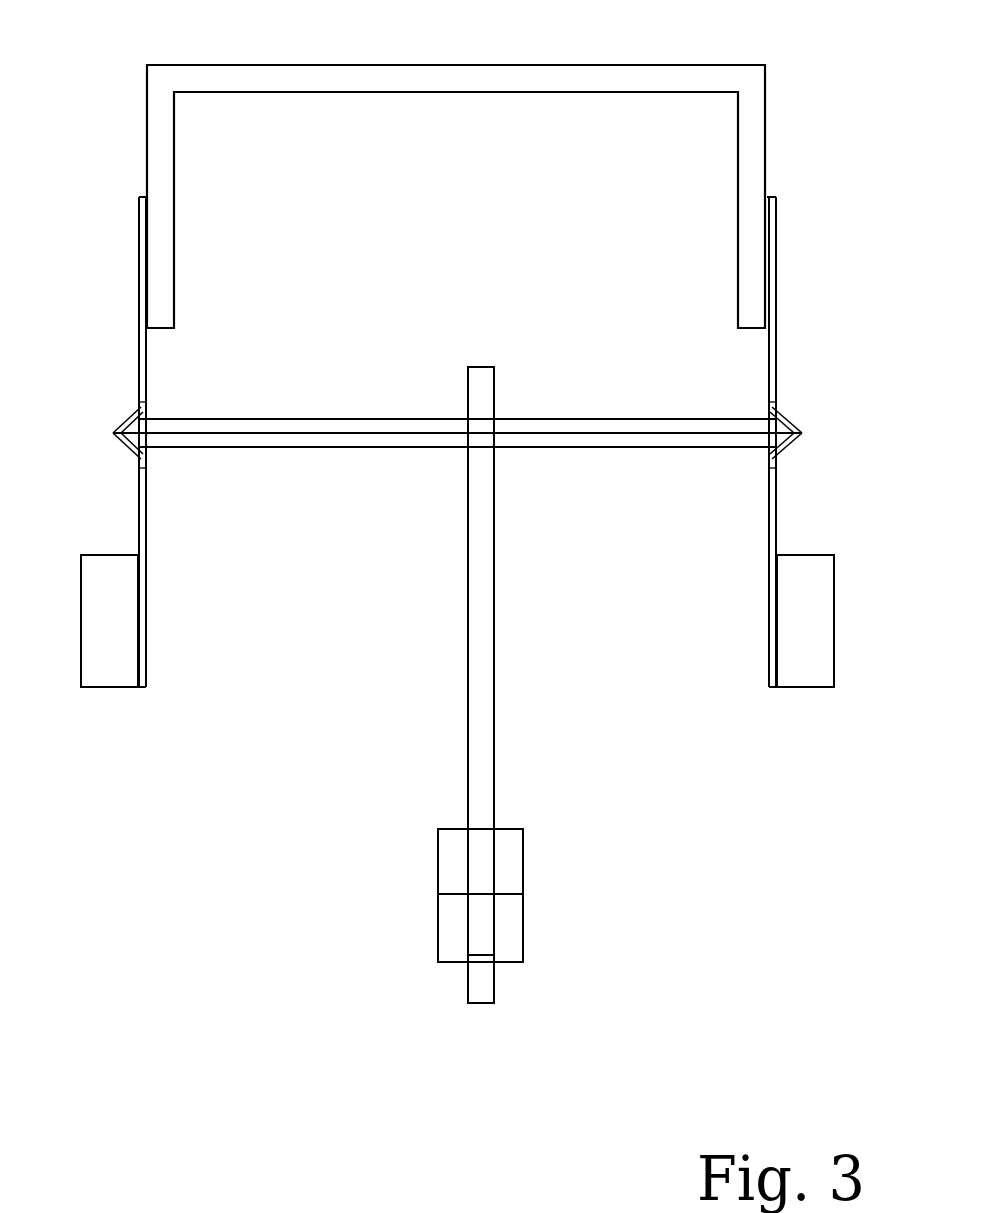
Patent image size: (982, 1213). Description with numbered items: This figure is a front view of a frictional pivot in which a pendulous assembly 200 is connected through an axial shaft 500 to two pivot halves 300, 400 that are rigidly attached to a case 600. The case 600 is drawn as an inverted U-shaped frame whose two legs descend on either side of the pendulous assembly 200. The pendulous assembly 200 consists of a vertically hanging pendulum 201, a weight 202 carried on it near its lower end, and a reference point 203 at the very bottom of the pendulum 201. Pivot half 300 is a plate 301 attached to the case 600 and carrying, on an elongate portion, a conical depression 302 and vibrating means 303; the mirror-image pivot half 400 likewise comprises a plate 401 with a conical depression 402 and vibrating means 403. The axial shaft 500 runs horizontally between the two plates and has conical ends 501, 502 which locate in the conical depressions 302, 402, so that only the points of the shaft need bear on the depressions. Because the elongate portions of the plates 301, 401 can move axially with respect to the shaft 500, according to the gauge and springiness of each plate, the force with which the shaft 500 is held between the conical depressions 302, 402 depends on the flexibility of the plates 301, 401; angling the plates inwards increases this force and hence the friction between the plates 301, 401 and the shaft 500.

The case 600 is at (452, 170).
The pivot half 300 is at (176, 492).
The plate 301 is at (93, 442).
The conical depression 302 is at (91, 463).
The vibrating means 303 is at (147, 671).
The pivot half 400 is at (723, 498).
The plate 401 is at (813, 439).
The conical depression 402 is at (820, 473).
The vibrating means 403 is at (764, 680).
The axial shaft 500 is at (455, 399).
The conical end 501 is at (91, 404).
The conical end 502 is at (820, 409).
The pendulous assembly 200 is at (390, 731).
The pendulum 201 is at (470, 600).
The weight 202 is at (390, 895).
The reference point 203 is at (407, 1025).